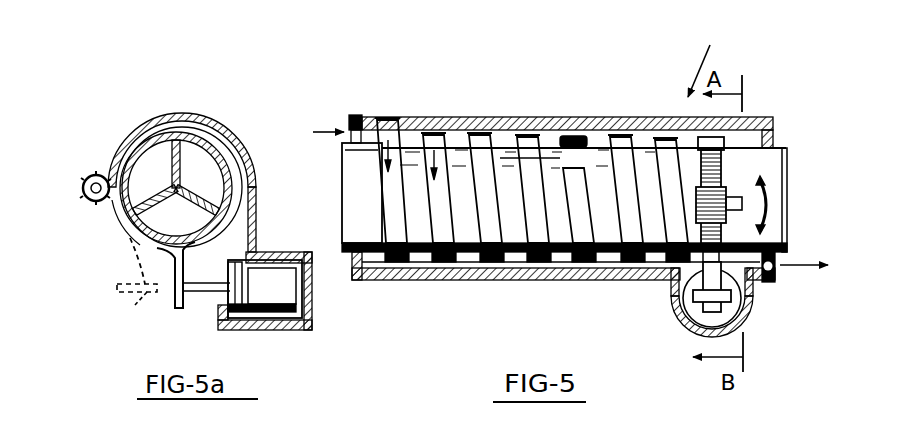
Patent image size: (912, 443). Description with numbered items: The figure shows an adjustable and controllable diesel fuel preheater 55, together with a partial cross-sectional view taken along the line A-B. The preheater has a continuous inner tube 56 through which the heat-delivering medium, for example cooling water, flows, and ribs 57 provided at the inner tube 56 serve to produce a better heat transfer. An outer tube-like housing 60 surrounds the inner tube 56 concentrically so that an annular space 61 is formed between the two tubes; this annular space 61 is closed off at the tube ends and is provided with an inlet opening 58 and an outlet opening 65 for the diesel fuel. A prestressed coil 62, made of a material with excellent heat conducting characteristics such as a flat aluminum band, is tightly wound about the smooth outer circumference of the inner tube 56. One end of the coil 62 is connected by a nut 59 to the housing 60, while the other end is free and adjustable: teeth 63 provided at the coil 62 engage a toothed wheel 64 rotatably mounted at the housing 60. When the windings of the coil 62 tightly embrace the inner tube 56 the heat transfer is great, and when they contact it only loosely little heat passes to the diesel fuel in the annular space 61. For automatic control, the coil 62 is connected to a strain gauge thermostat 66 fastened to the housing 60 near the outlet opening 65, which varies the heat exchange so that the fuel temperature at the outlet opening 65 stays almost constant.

In FIG. 5, the diesel fuel preheater 55 is at (699, 53).
In FIG. 5a, the inner tube 56 is at (230, 160).
In FIG. 5, the inner tube 56 is at (346, 180).
In FIG. 5a, the ribs 57 is at (164, 142).
In FIG. 5, the inlet opening 58 is at (350, 122).
In FIG. 5, the nut 59 is at (387, 130).
In FIG. 5a, the housing 60 is at (282, 252).
In FIG. 5, the housing 60 is at (441, 117).
In FIG. 5, the annular space 61 is at (505, 140).
In FIG. 5a, the coil 62 is at (121, 233).
In FIG. 5, the coil 62 is at (574, 138).
In FIG. 5, the teeth 63 is at (685, 127).
In FIG. 5a, the toothed wheel 64 is at (88, 177).
In FIG. 5, the toothed wheel 64 is at (766, 121).
In FIG. 5, the outlet opening 65 is at (777, 272).
In FIG. 5a, the strain gauge thermostat 66 is at (305, 305).
In FIG. 5, the strain gauge thermostat 66 is at (689, 303).